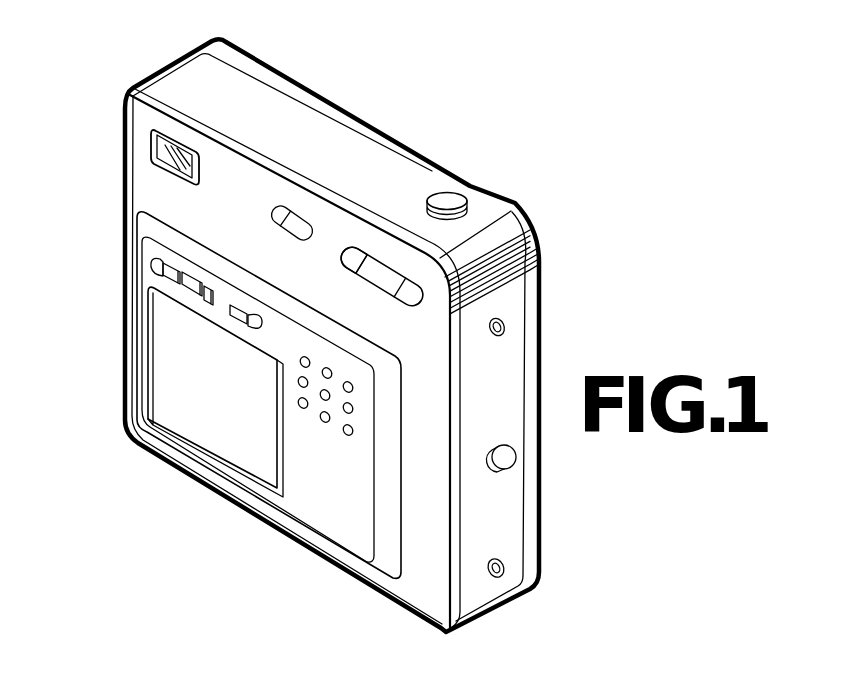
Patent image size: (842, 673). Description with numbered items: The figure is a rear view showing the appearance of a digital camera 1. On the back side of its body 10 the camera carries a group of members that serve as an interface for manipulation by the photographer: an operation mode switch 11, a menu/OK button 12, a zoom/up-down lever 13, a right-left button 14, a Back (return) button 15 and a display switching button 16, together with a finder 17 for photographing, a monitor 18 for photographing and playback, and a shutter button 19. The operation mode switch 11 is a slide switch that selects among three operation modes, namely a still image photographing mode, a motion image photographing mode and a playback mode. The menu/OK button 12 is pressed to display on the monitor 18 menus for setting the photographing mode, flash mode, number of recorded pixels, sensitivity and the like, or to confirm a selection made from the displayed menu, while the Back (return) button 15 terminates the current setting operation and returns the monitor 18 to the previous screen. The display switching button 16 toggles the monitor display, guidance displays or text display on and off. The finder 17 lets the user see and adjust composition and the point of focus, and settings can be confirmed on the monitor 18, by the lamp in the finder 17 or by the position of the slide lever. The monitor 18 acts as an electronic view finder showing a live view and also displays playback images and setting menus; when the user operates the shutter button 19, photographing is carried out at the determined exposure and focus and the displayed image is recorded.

The digital camera 1 is at (341, 49).
The body 10 is at (367, 133).
The operation mode switch 11 is at (238, 320).
The menu/OK button 12 is at (175, 284).
The zoom/up-down lever 13 is at (385, 267).
The right-left button 14 is at (360, 257).
The Back (return) button 15 is at (152, 287).
The display switching button 16 is at (150, 260).
The finder 17 is at (147, 143).
The monitor 18 is at (175, 400).
The shutter button 19 is at (448, 201).